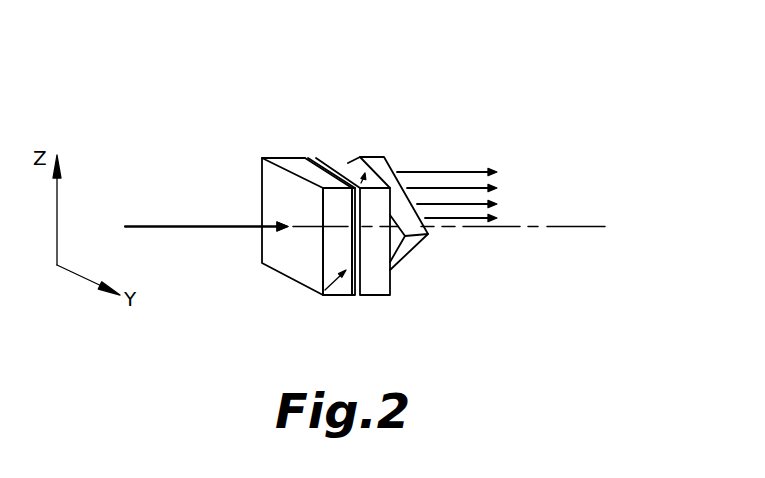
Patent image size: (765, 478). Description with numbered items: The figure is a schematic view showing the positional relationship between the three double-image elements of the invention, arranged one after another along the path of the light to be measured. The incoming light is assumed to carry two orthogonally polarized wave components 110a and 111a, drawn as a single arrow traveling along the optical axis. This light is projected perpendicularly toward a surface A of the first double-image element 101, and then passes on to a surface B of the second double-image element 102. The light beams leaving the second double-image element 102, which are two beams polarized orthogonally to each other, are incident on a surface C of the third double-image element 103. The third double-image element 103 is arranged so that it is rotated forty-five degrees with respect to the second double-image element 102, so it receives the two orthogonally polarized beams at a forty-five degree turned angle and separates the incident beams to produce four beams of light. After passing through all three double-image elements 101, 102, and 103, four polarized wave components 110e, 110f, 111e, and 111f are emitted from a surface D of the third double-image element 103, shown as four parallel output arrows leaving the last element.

The first double-image element 101 is at (282, 218).
The second double-image element 102 is at (313, 216).
The third double-image element 103 is at (376, 223).
The orthogonally polarized wave component 110a is at (205, 215).
The orthogonally polarized wave component 111a is at (206, 215).
The polarized wave component 110e is at (478, 172).
The polarized wave component 110f is at (492, 188).
The polarized wave component 111e is at (492, 203).
The polarized wave component 111f is at (493, 218).
The surface of the first double-image element A is at (307, 277).
The surface of the second double-image element B is at (352, 295).
The surface of the third double-image element C is at (392, 275).
The surface of the third double-image element D is at (418, 246).